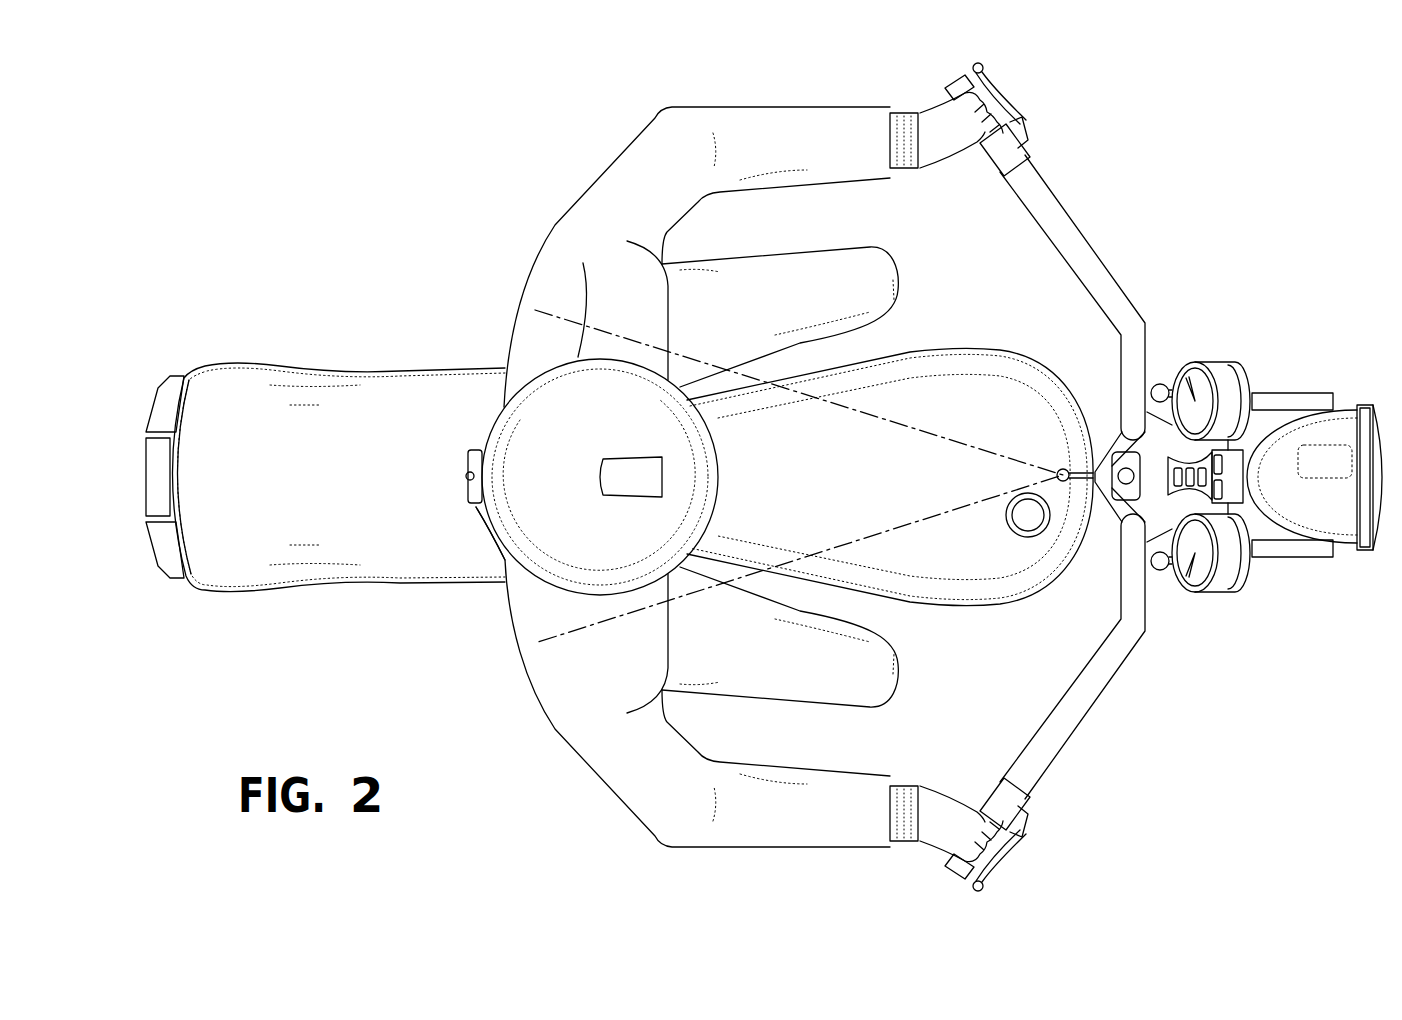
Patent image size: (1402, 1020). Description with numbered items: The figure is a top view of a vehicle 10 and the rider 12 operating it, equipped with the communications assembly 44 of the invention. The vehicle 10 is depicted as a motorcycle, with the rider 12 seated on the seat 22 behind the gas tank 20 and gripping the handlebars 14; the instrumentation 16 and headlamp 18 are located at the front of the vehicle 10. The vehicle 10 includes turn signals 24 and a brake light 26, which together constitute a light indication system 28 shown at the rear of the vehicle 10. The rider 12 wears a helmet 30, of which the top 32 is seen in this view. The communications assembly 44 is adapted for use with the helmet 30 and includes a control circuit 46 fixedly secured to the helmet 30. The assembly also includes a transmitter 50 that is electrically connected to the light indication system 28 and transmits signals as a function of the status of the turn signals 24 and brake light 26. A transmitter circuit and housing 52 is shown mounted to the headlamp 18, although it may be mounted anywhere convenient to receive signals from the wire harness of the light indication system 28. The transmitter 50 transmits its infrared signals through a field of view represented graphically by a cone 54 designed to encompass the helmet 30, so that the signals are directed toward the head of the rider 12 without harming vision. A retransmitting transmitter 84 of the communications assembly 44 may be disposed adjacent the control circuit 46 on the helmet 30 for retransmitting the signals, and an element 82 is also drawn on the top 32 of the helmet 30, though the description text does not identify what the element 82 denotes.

The vehicle 10 is at (1145, 227).
The rider 12 is at (533, 292).
The handlebars 14 is at (1090, 680).
The instrumentation 16 is at (1218, 366).
The headlamp 18 is at (1347, 533).
The gas tank 20 is at (970, 558).
The seat 22 is at (350, 363).
The turn signals 24 is at (150, 410).
The brake light 26 is at (148, 485).
The light indication system 28 is at (120, 358).
The helmet 30 is at (583, 263).
The top 32 is at (559, 479).
The communications assembly 44 is at (458, 185).
The control circuit 46 is at (474, 506).
The transmitter 50 is at (1039, 470).
The transmitter circuit and housing 52 is at (1338, 442).
The cone 54 is at (910, 423).
The helmet indicator 82 is at (640, 457).
The retransmitting transmitter 84 is at (466, 473).